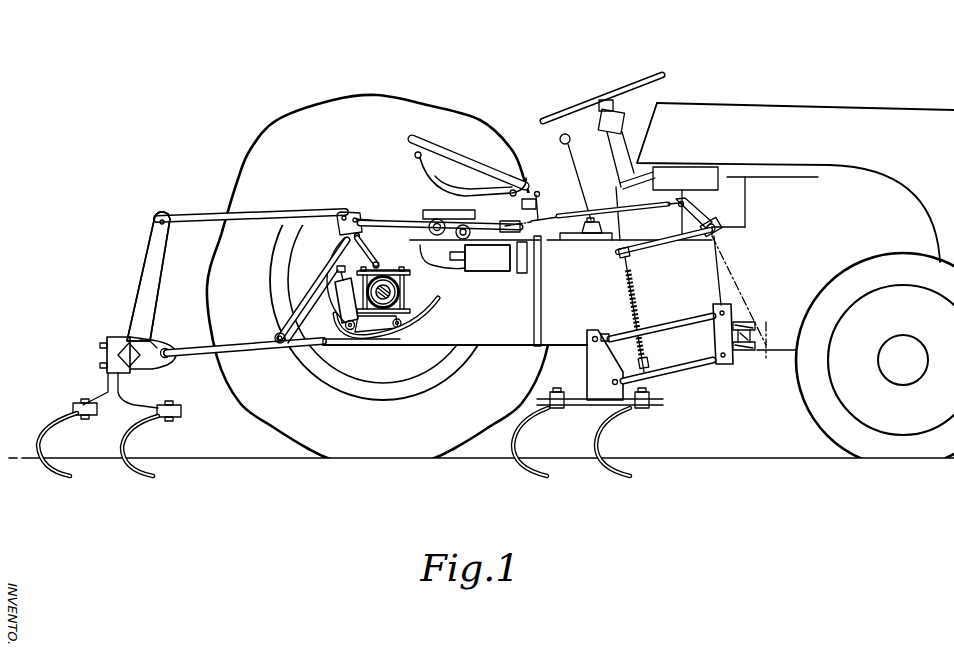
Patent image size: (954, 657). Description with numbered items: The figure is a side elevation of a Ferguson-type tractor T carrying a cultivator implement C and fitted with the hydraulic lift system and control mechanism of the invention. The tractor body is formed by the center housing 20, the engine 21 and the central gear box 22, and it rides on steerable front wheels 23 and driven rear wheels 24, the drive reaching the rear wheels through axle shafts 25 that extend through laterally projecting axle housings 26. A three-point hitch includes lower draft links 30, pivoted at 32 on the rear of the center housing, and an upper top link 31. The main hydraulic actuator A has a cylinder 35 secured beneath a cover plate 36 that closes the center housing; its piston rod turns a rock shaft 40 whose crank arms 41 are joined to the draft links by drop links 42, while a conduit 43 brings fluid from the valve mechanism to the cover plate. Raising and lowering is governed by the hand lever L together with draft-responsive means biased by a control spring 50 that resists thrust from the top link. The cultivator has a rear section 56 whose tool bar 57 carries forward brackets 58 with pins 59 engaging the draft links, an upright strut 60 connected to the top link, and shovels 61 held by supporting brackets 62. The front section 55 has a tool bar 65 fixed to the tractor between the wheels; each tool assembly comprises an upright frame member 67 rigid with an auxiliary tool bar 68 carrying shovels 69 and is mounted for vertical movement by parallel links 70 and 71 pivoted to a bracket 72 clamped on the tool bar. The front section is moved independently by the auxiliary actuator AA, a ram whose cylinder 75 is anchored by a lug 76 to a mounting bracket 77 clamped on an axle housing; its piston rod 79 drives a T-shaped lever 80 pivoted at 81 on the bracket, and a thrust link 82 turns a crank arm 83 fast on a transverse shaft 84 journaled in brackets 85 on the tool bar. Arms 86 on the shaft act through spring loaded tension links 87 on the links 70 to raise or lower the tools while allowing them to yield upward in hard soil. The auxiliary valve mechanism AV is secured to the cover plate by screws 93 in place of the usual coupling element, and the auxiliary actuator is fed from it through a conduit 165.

The tractor T is at (819, 98).
The implement C is at (148, 277).
The manually operable lever L is at (513, 190).
The hydraulic actuator A is at (507, 276).
The auxiliary actuator AA is at (286, 272).
The auxiliary valve mechanism AV is at (548, 205).
The center housing 20 is at (500, 347).
The engine 21 is at (784, 352).
The central gear box 22 is at (573, 348).
The front wheels 23 is at (825, 418).
The rear wheels 24 is at (270, 422).
The axle shafts 25 is at (399, 292).
The axle housings 26 is at (422, 320).
The draft links 30 is at (205, 356).
The top link 31 is at (204, 214).
The pivots 32 is at (399, 330).
The cylinder 35 is at (492, 271).
The cover plate 36 is at (415, 215).
The rock shaft 40 is at (437, 220).
The crank arm 41 is at (377, 223).
The drop links 42 is at (292, 301).
The conduit 43 is at (526, 262).
The control spring 50 is at (407, 231).
The front section 55 is at (663, 410).
The rear section 56 is at (104, 352).
The tool bar 57 is at (123, 337).
The brackets 58 is at (158, 343).
The pins 59 is at (164, 358).
The upright strut 60 is at (148, 283).
The shovels 61 is at (130, 454).
The supporting brackets 62 is at (125, 400).
The tool bar 65 is at (752, 324).
The upright frame member 67 is at (597, 392).
The auxiliary tool bar 68 is at (661, 402).
The shovels 69 is at (600, 453).
The parallel link 70 is at (694, 364).
The parallel link 71 is at (691, 318).
The bracket 72 is at (738, 320).
The cylinder 75 is at (300, 356).
The lug 76 is at (350, 332).
The mounting bracket 77 is at (367, 333).
The piston rod 79 is at (333, 275).
The T-shaped lever 80 is at (347, 244).
The pivot 81 is at (379, 264).
The thrust link 82 is at (605, 212).
The crank arm 83 is at (700, 211).
The shaft 84 is at (735, 233).
The brackets 85 is at (752, 268).
The arms 86 is at (667, 248).
The spring loaded tension links 87 is at (634, 305).
The screws 93 is at (520, 207).
The conduit 165 is at (422, 328).